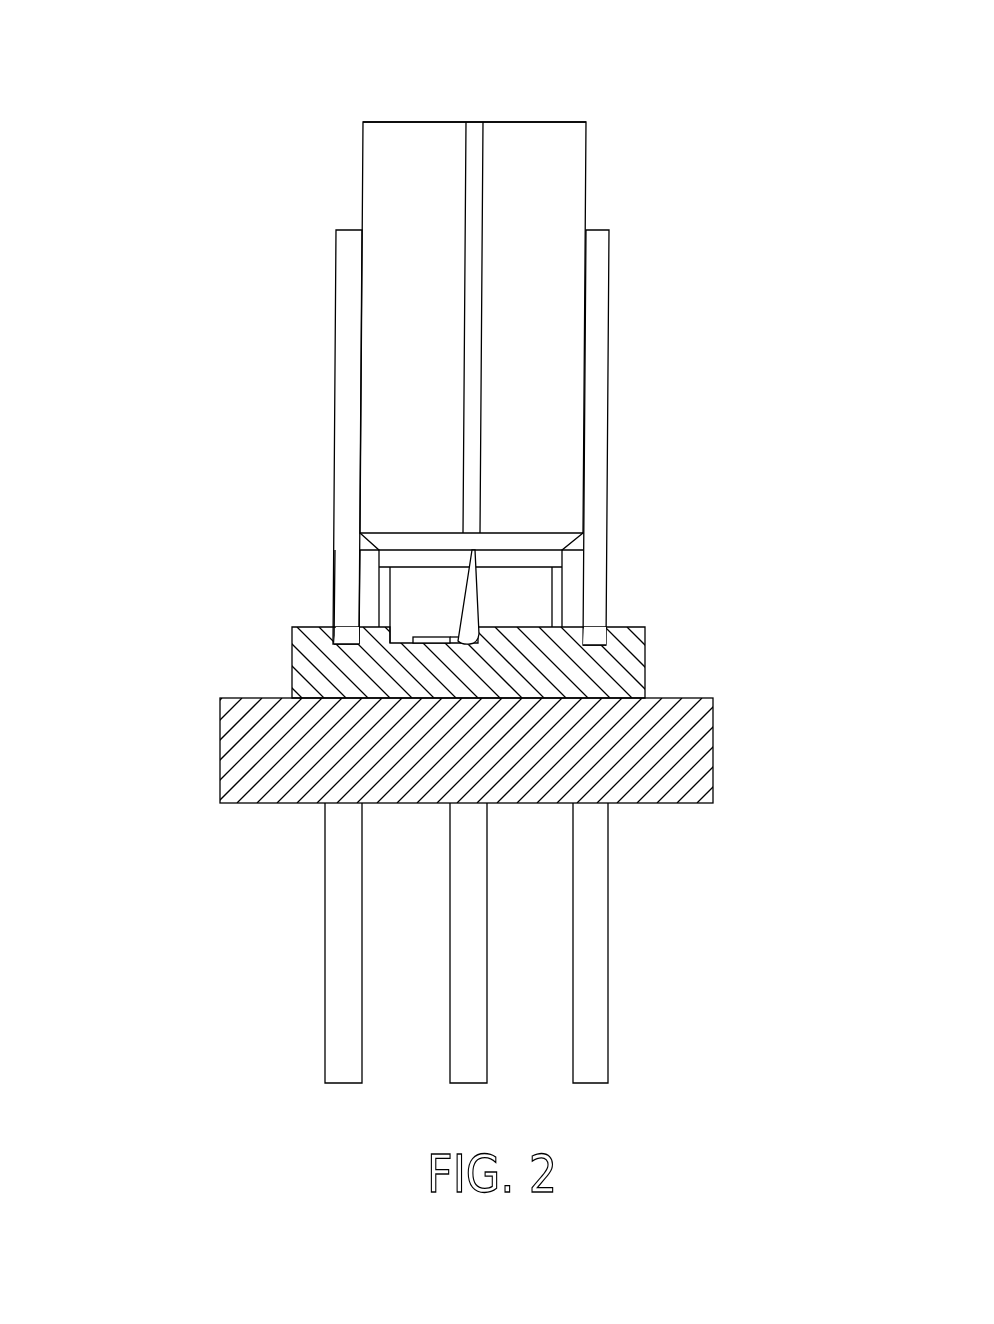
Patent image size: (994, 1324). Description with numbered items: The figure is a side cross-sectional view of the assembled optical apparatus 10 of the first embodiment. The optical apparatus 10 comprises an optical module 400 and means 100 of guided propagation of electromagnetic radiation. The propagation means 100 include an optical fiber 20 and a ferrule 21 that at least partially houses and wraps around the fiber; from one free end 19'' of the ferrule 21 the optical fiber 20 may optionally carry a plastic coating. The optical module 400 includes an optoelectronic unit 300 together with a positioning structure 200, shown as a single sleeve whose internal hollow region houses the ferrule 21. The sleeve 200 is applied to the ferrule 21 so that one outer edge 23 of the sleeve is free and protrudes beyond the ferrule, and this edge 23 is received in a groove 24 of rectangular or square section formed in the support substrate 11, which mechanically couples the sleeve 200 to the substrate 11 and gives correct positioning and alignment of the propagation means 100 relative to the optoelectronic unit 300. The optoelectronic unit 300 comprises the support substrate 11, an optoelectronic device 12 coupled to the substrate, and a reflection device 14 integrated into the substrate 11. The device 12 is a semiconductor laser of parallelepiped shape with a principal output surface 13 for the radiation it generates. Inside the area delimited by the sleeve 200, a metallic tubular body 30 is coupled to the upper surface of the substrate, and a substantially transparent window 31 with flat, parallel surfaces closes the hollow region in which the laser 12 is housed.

The optical apparatus 10 is at (855, 240).
The support substrate 11 is at (647, 682).
The optoelectronic device 12 is at (428, 635).
The principal output surface 13 is at (457, 640).
The reflection device 14 is at (471, 637).
The free end of the ferrule 19'' is at (469, 67).
The optical fiber 20 is at (483, 157).
The ferrule 21 is at (563, 178).
The outer edge of the sleeve 23 is at (347, 607).
The groove 24 is at (618, 653).
The tubular body 30 is at (370, 580).
The window 31 is at (534, 557).
The propagation means 100 is at (352, 178).
The positioning structure 200 is at (605, 443).
The optoelectronic unit 300 is at (716, 674).
The optical module 400 is at (156, 383).